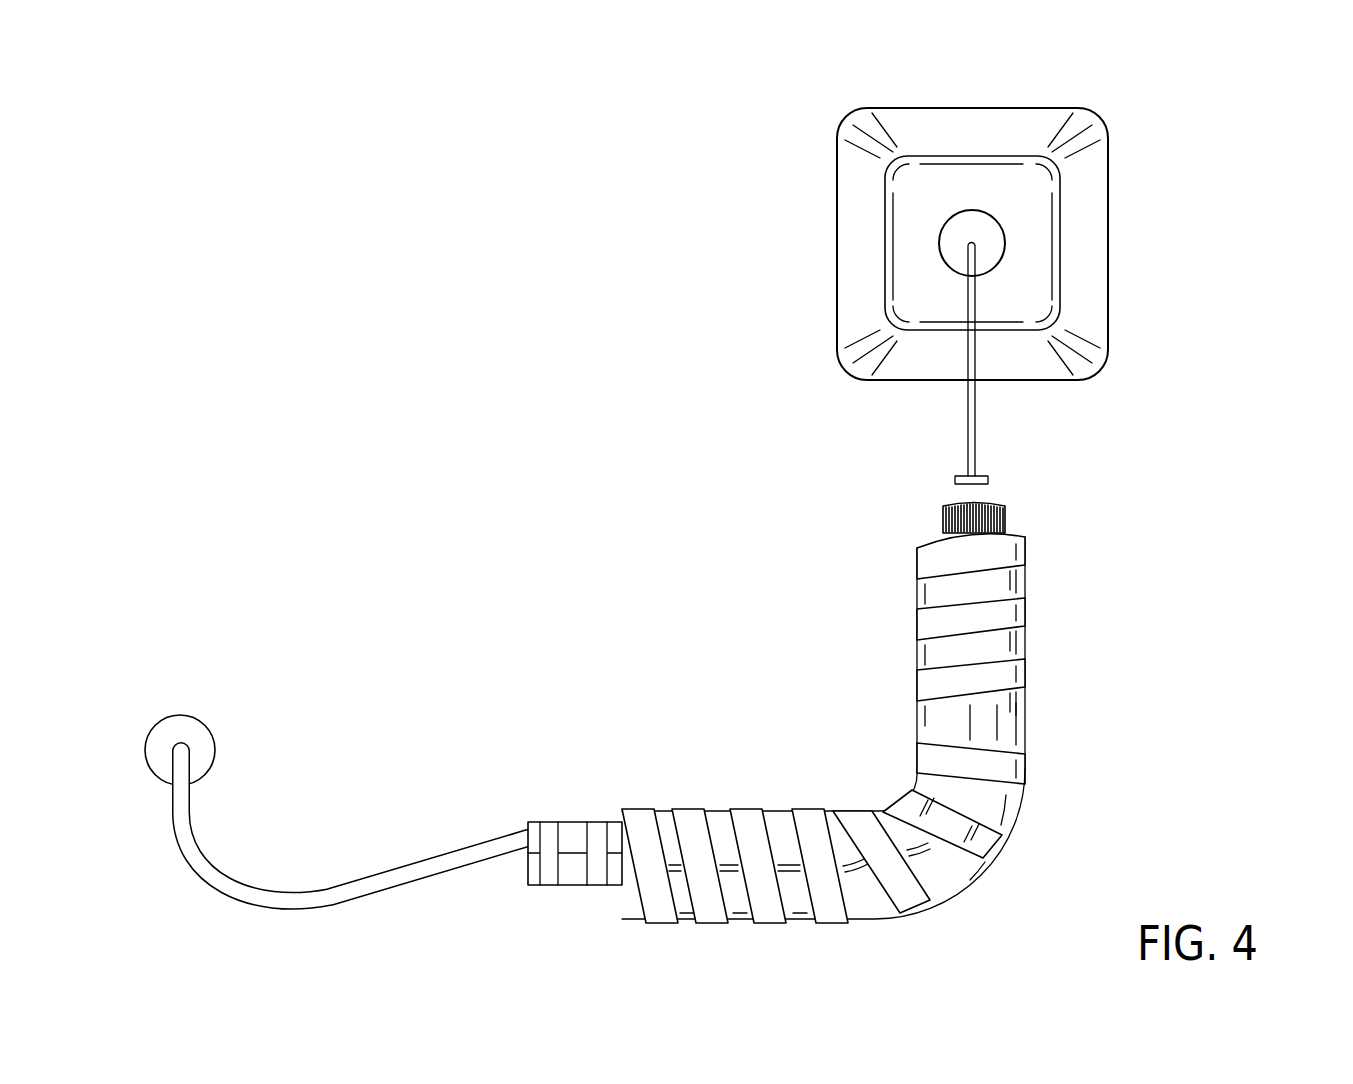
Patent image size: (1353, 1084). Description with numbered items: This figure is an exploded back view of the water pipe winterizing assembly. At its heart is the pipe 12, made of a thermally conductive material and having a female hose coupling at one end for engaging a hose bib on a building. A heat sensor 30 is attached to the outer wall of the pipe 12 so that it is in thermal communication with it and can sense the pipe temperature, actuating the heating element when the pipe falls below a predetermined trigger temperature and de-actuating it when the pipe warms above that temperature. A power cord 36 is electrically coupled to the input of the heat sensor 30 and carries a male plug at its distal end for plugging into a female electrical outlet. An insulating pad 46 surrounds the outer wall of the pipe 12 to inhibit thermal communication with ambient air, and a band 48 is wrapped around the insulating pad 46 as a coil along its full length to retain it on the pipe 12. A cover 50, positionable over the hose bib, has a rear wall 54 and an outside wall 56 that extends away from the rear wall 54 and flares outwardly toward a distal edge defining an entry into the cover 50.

The pipe 12 is at (577, 885).
The heat sensor 30 is at (383, 841).
The power cord 36 is at (313, 905).
The insulating pad 46 is at (950, 870).
The band 48 is at (925, 694).
The cover 50 is at (837, 187).
The rear wall 54 is at (1015, 202).
The outside wall 56 is at (968, 132).